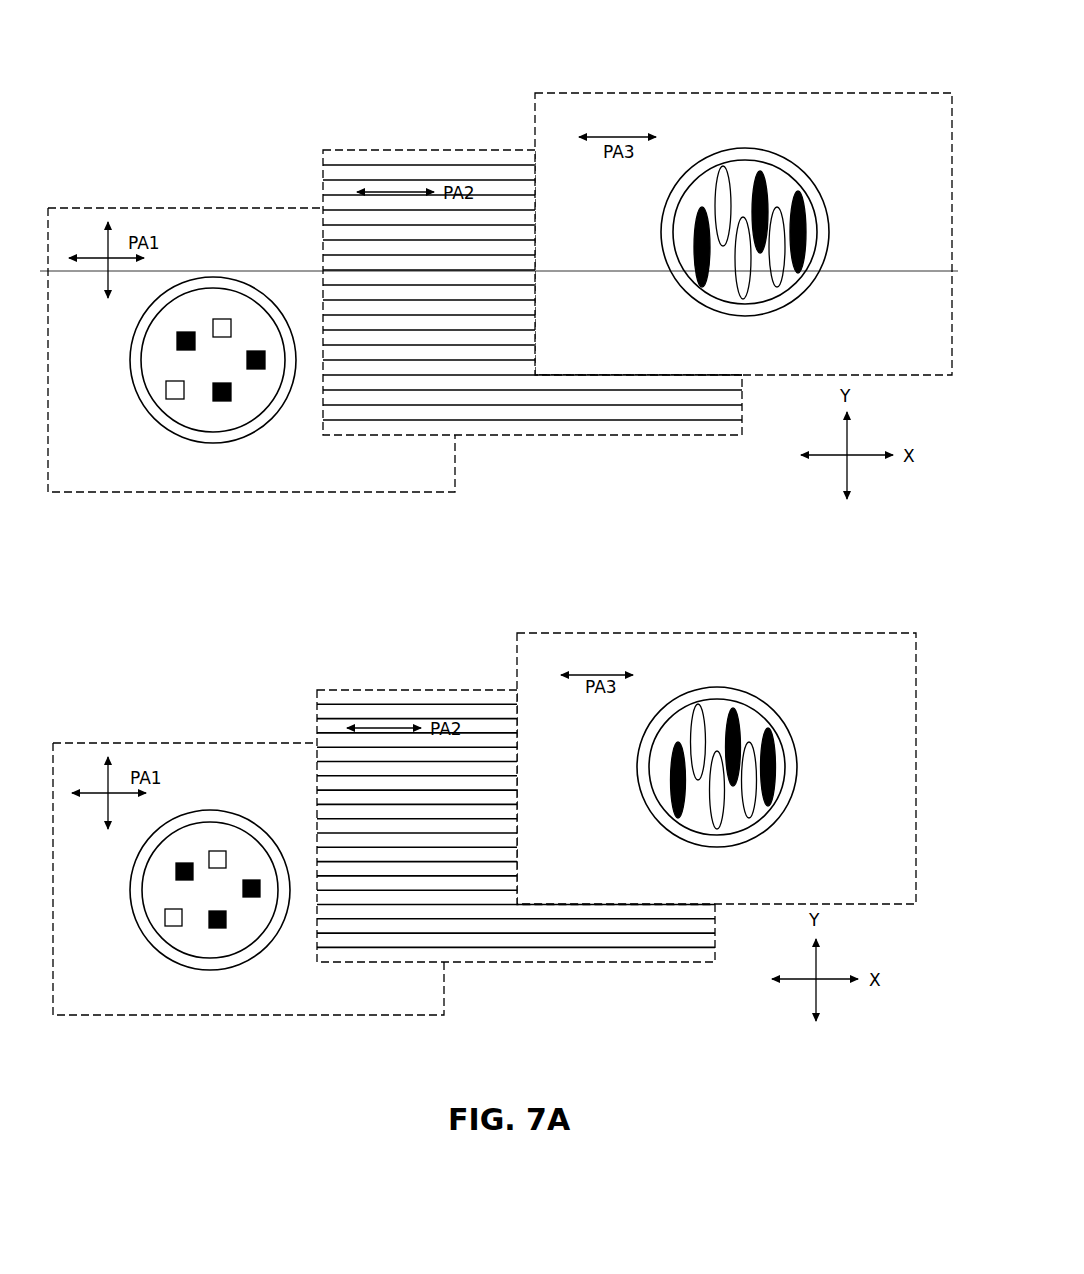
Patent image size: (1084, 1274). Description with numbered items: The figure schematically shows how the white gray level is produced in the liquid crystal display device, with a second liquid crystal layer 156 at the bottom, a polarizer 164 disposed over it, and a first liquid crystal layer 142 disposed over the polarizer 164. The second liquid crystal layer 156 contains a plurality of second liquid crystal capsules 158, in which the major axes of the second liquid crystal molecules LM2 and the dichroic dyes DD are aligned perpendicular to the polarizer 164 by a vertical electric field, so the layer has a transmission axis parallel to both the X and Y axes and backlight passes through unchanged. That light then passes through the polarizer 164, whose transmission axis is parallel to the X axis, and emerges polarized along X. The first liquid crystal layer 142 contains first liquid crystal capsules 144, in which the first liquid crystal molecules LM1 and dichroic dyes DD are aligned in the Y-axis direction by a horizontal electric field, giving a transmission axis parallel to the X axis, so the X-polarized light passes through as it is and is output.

The first liquid crystal layer 142 is at (612, 93).
The first liquid crystal capsule 144 is at (612, 248).
The second liquid crystal layer 156 is at (215, 208).
The second liquid crystal capsule 158 is at (96, 334).
The polarizer 164 is at (418, 150).
The dichroic dye DD is at (177, 341).
The first liquid crystal molecule LM1 is at (691, 742).
The second liquid crystal molecule LM2 is at (171, 390).